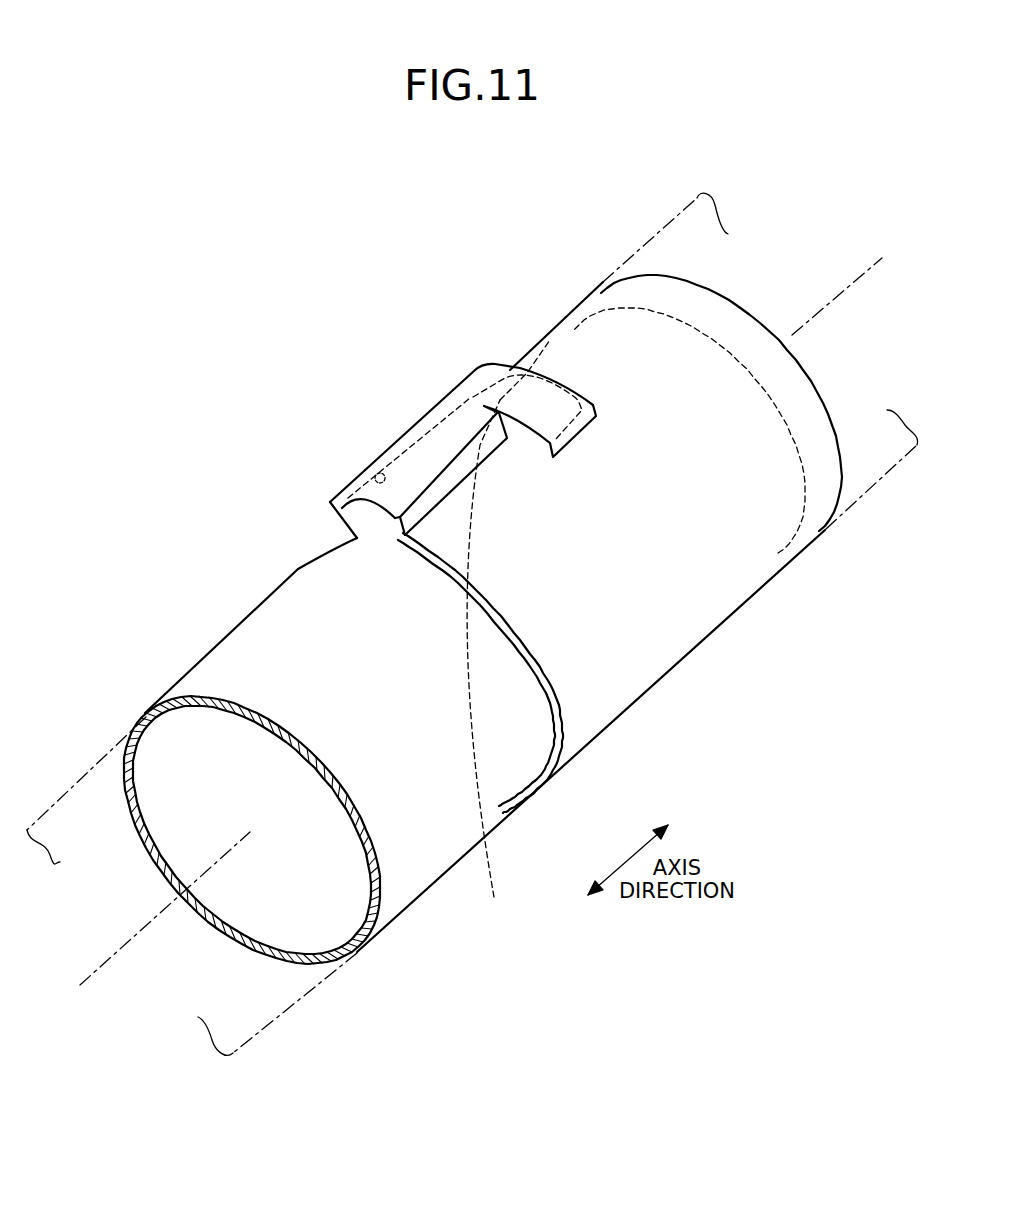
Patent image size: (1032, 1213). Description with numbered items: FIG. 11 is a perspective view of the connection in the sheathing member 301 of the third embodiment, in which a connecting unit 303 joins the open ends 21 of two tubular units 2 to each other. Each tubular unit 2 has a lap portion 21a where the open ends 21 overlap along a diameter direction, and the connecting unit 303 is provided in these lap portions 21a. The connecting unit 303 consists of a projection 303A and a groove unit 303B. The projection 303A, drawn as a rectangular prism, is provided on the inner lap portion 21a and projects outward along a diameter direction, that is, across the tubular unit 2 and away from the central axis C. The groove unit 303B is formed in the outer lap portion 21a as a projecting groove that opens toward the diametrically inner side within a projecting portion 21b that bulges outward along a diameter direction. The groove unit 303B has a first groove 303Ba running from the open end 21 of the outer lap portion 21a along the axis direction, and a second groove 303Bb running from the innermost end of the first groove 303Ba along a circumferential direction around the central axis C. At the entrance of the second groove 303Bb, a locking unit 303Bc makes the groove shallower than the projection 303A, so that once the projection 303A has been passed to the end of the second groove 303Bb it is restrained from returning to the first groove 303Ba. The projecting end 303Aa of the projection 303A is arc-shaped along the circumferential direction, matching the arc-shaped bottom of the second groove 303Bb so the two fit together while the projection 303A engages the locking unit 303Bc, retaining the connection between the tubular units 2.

The tubular unit 2 is at (483, 562).
The open end 21 is at (483, 562).
The lap portion 21a is at (632, 318).
The projecting portion 21b is at (352, 480).
The sheathing member 301 is at (396, 557).
The connecting unit 303 is at (396, 595).
The projection 303A is at (497, 617).
The projecting end 303Aa is at (528, 402).
The groove unit 303B is at (396, 388).
The first groove 303Ba is at (378, 472).
The second groove 303Bb is at (558, 392).
The locking unit 303Bc is at (450, 402).
The central axis C is at (106, 968).